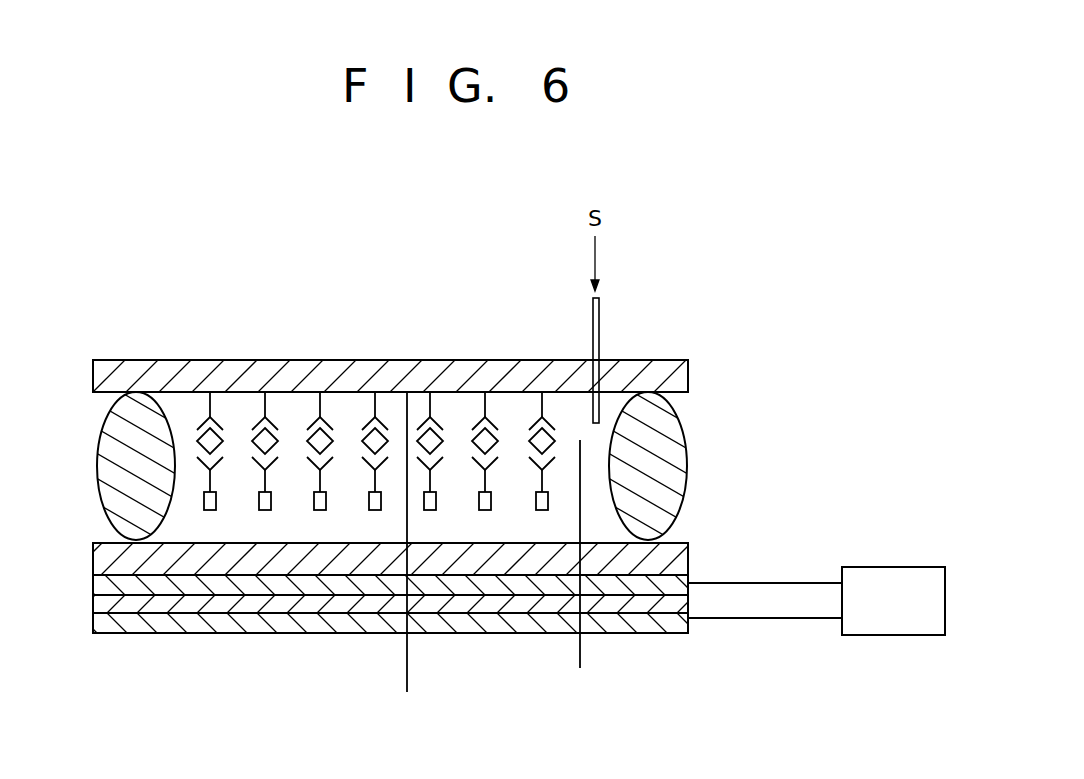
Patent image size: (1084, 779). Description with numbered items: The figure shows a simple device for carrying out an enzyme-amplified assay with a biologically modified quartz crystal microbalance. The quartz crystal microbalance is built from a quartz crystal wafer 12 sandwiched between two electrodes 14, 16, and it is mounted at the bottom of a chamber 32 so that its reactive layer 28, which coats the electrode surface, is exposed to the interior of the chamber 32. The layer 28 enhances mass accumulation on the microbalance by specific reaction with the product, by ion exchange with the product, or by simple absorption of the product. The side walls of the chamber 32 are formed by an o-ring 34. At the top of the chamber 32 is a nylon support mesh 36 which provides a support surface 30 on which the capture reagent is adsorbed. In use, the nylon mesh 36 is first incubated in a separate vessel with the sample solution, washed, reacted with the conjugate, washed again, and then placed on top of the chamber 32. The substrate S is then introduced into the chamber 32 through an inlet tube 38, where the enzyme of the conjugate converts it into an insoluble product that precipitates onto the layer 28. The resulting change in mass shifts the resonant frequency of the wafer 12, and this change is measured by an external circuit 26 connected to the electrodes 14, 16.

The quartz crystal wafer 12 is at (172, 608).
The electrode 14 is at (272, 633).
The electrode 16 is at (657, 587).
The external circuit 26 is at (893, 617).
The layer 28 is at (688, 557).
The support surface 30 is at (408, 560).
The chamber 32 is at (578, 576).
The o-ring 34 is at (680, 418).
The nylon support mesh 36 is at (670, 365).
The inlet tube 38 is at (600, 323).